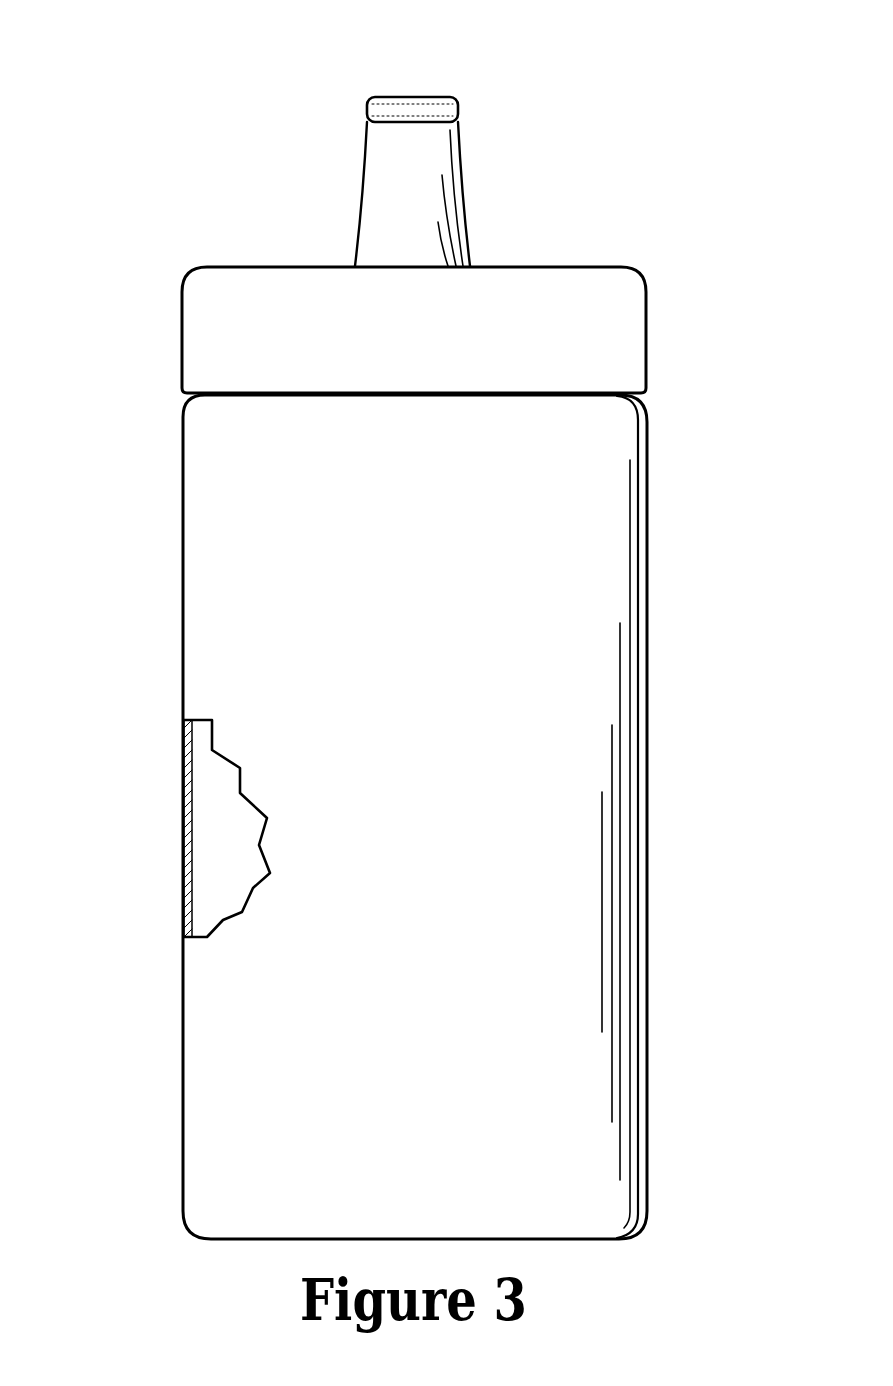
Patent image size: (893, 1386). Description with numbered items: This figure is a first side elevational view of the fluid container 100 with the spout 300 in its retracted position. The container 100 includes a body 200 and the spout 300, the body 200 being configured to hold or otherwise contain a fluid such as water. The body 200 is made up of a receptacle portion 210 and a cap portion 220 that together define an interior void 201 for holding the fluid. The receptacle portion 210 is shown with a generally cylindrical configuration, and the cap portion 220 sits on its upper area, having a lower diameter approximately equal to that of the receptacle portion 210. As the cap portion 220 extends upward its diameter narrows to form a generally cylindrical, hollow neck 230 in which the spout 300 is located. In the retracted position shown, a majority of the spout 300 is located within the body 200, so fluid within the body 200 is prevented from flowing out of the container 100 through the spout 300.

The fluid container 100 is at (124, 221).
The body 200 is at (176, 519).
The interior void 201 is at (227, 847).
The receptacle portion 210 is at (647, 853).
The cap portion 220 is at (647, 337).
The neck 230 is at (462, 193).
The spout 300 is at (371, 96).